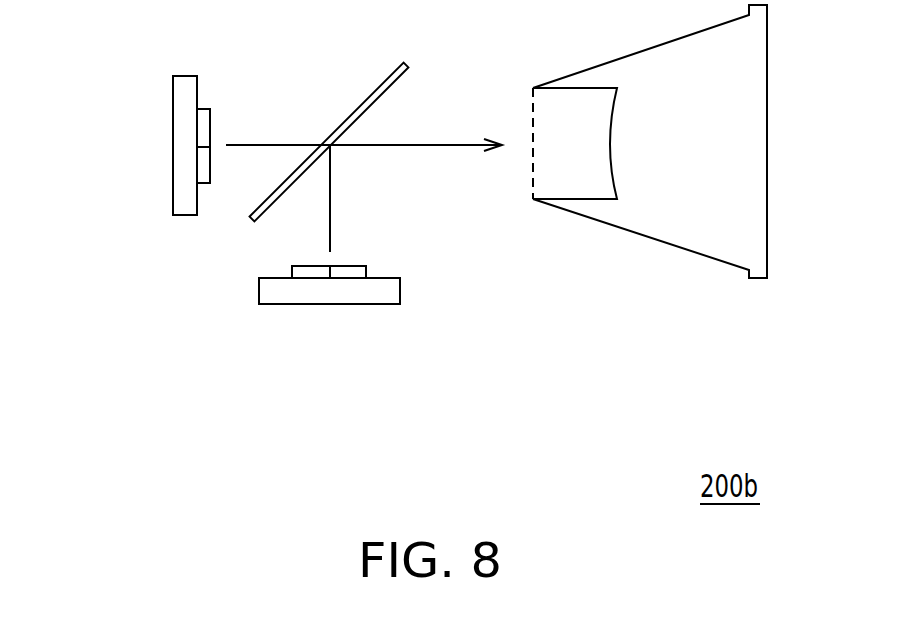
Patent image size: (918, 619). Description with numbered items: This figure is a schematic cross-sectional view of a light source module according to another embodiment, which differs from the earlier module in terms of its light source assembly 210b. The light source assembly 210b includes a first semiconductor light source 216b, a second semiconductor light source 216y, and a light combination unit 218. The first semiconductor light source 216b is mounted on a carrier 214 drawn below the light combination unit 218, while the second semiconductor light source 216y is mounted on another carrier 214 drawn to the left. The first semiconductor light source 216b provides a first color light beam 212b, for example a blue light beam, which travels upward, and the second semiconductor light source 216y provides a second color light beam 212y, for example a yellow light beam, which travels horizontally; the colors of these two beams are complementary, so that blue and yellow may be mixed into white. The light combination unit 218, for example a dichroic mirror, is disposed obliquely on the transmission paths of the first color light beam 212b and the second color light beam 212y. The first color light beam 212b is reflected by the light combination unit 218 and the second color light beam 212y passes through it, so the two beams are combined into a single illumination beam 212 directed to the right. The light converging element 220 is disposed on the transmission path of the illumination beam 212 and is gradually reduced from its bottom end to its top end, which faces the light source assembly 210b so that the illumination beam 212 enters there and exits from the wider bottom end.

The carrier 214 is at (180, 89).
The second semiconductor light source 216y is at (202, 122).
The first semiconductor light source 216b is at (305, 277).
The illumination beam 212 is at (447, 144).
The second color light beam 212y is at (275, 145).
The first color light beam 212b is at (331, 210).
The light combination unit 218 is at (242, 223).
The light converging element 220 is at (678, 233).
The light source assembly 210b is at (433, 346).